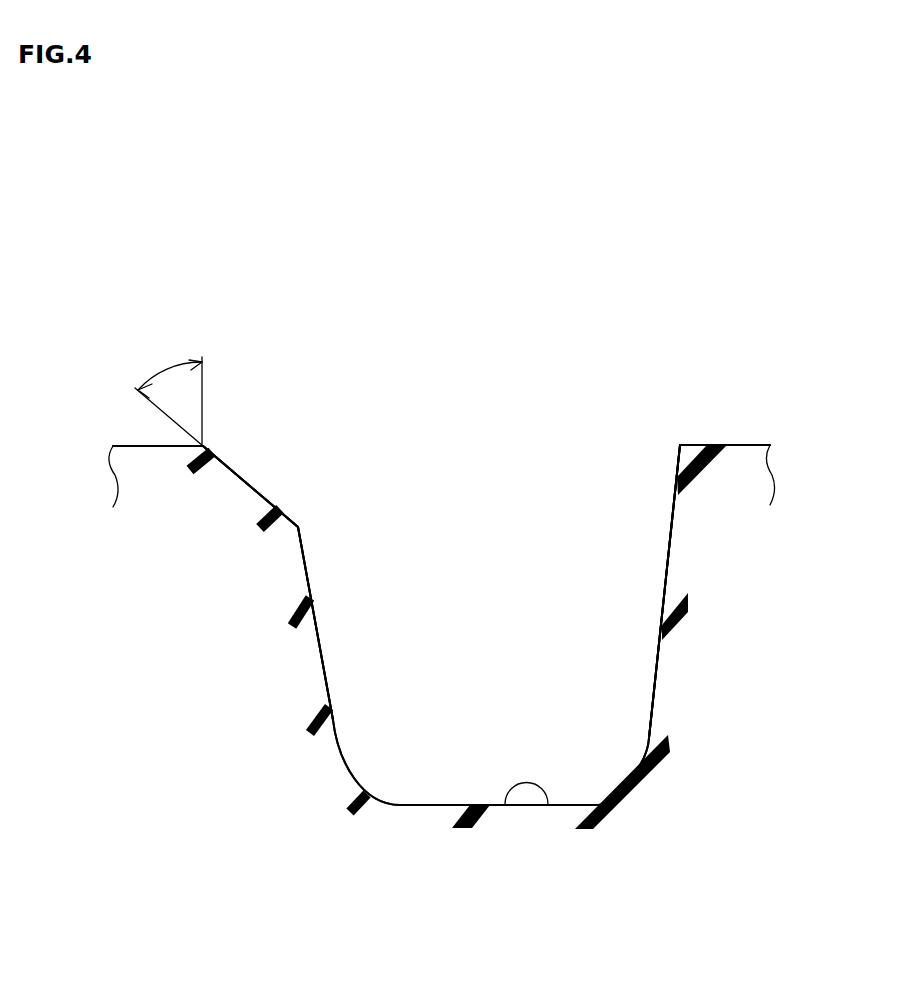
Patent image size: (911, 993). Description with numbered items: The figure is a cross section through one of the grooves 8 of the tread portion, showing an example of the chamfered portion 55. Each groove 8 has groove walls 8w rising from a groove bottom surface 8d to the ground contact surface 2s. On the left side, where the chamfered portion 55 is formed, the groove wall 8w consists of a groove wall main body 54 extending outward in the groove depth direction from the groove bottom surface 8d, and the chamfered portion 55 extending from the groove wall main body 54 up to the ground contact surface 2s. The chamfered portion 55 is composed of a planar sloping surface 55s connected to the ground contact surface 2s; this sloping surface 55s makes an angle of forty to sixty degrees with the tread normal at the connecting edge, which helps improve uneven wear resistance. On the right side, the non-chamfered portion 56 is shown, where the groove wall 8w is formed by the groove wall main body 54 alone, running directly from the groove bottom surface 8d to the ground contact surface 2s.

The groove 8 is at (457, 735).
The ground contact surface 2s is at (137, 445).
The chamfered portion 55 is at (258, 488).
The sloping surface 55s is at (228, 463).
The groove wall main body 54 is at (320, 642).
The groove wall 8w is at (432, 393).
The non-chamfered portion 56 is at (683, 442).
The groove bottom surface 8d is at (546, 800).